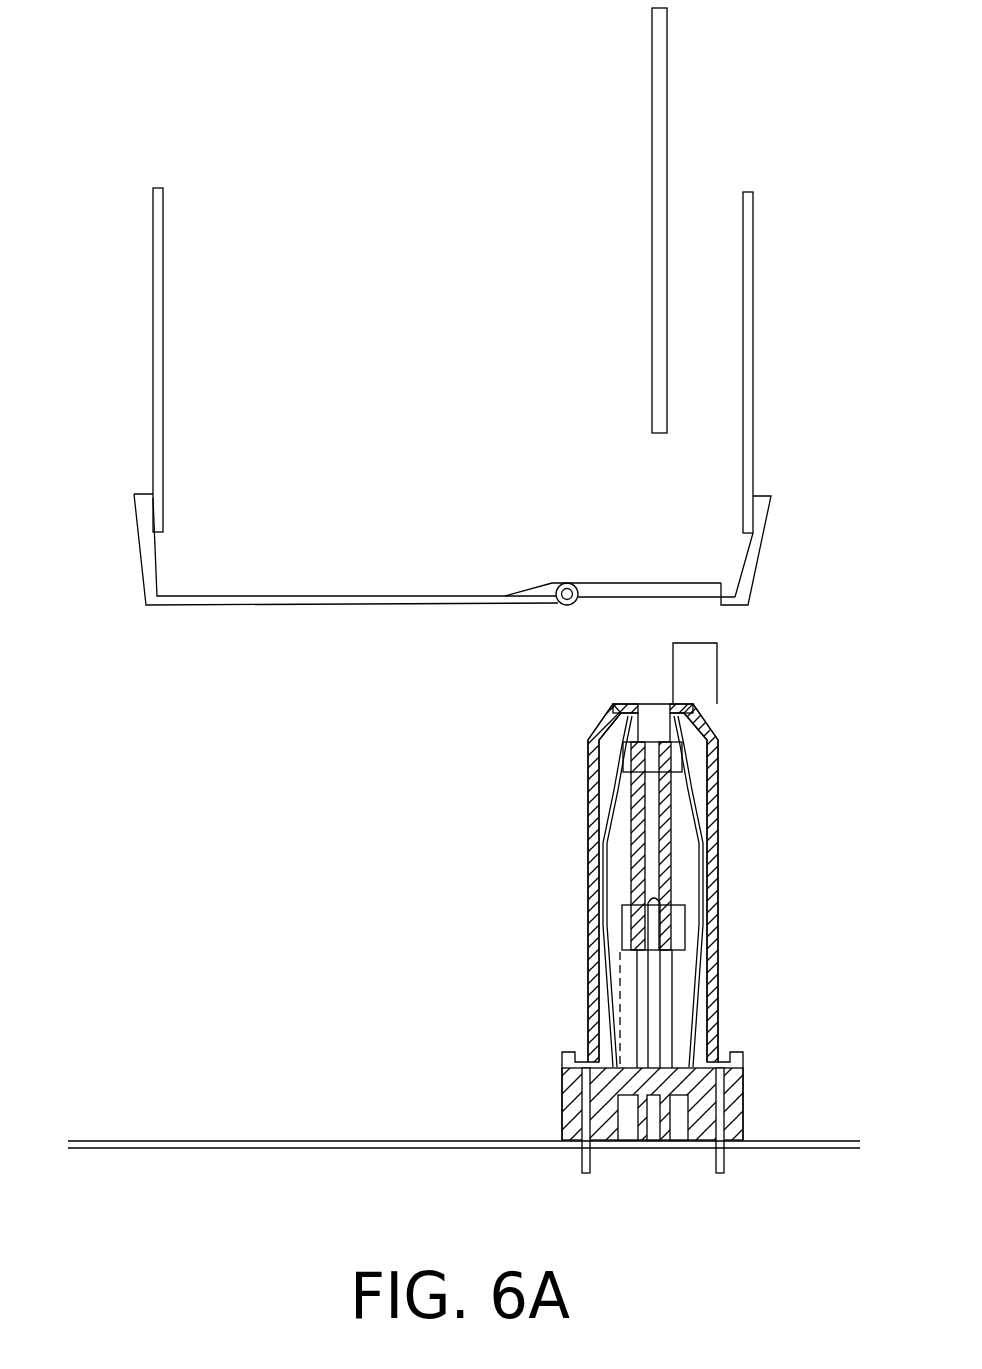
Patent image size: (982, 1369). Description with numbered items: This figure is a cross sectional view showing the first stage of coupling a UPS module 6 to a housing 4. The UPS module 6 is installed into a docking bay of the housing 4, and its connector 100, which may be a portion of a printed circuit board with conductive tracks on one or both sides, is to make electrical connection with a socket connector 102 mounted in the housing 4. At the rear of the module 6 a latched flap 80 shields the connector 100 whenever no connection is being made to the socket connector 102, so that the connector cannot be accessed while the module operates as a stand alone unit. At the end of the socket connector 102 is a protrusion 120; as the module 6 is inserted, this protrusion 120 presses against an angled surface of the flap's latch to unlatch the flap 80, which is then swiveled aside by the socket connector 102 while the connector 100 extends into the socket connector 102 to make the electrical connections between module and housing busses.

The UPS module 6 is at (360, 385).
The connector 100 is at (667, 98).
The latched flap 80 is at (660, 582).
The protrusion 120 is at (687, 668).
The housing 4 is at (603, 900).
The socket connector 102 is at (742, 862).